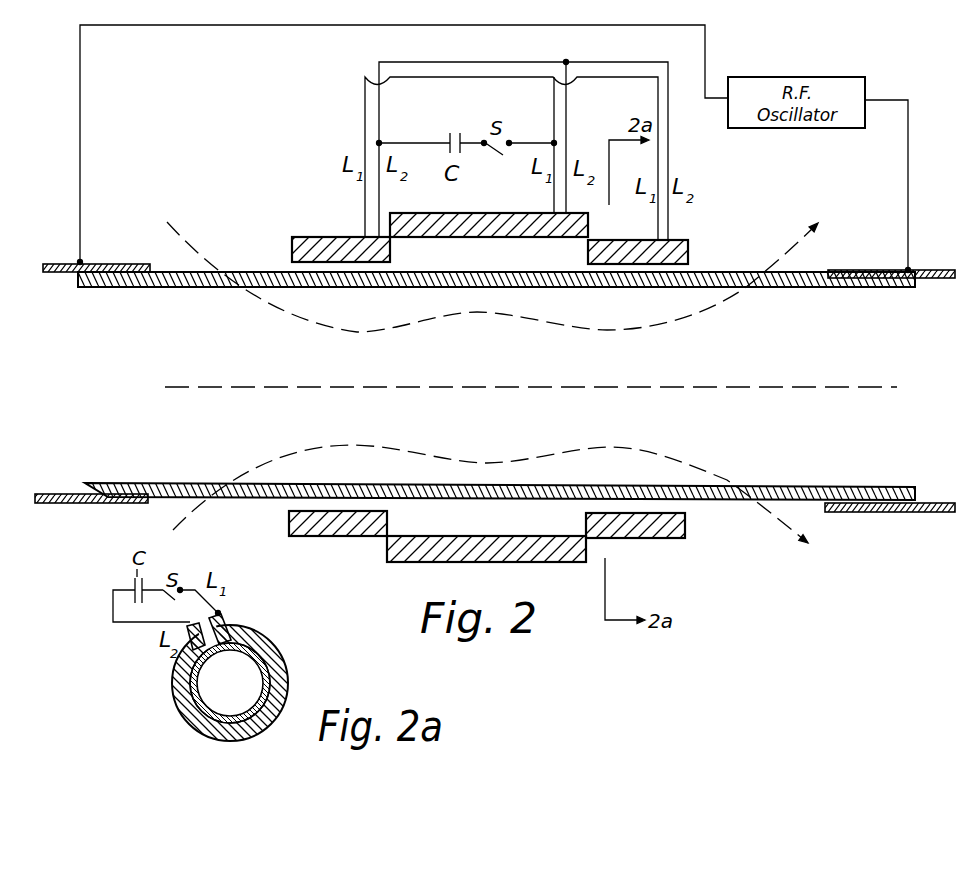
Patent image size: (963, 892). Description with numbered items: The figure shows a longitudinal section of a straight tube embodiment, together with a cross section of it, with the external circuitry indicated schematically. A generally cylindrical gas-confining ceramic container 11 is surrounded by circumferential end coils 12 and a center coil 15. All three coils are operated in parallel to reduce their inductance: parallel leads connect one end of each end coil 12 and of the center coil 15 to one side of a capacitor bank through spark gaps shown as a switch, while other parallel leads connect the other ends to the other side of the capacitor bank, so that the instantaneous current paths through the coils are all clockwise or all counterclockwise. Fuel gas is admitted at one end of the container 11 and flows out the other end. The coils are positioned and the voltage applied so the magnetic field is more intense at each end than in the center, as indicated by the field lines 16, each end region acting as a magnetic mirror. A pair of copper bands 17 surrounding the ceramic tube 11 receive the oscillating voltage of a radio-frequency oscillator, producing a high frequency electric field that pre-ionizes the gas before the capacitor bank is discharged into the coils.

In FIG. 2, the gas-confining ceramic container 11 is at (241, 272).
In FIG. 2A, the gas-confining ceramic container 11 is at (256, 718).
In FIG. 2, the circumferential end coils 12 is at (341, 237).
In FIG. 2A, the circumferential end coils 12 is at (285, 703).
In FIG. 2, the center coil 15 is at (494, 213).
In FIG. 2, the field lines 16 is at (372, 442).
In FIG. 2, the copper bands 17 is at (57, 264).